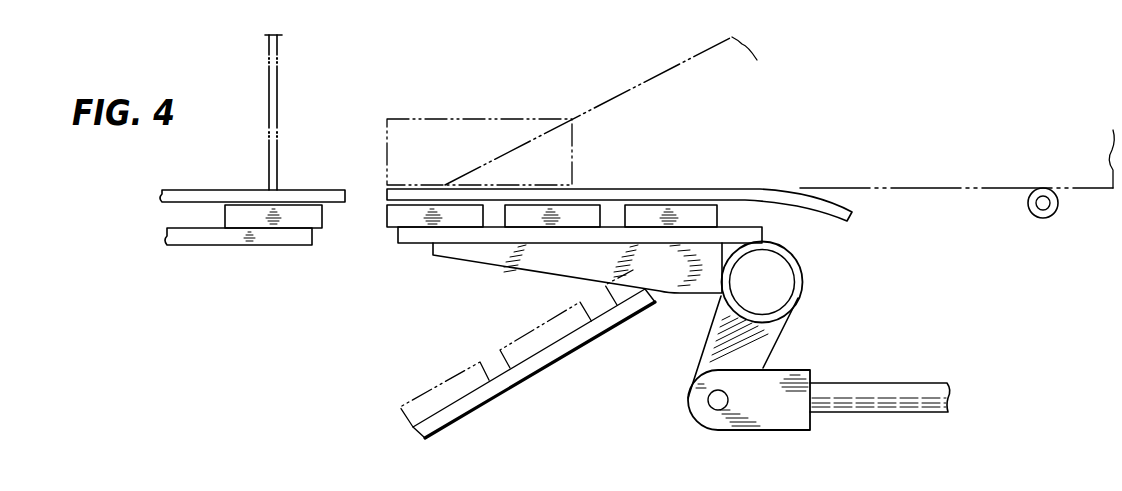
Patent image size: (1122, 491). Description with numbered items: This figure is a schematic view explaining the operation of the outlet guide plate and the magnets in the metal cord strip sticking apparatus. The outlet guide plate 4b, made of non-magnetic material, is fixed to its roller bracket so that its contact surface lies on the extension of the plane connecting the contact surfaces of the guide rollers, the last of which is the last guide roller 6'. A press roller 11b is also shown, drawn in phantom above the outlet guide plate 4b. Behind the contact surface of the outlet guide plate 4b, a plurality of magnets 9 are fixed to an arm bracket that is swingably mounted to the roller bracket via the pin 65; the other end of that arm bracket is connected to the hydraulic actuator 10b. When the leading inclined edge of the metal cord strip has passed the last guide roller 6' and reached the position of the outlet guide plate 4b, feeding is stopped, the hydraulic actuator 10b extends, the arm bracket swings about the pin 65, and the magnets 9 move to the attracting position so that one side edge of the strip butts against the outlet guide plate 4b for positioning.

The press roller 11b is at (418, 130).
The outlet guide plate 4b is at (785, 189).
The last guide roller 6' is at (1053, 222).
The magnets 9 is at (390, 212).
The pin 65 is at (782, 270).
The hydraulic actuator 10b is at (793, 432).